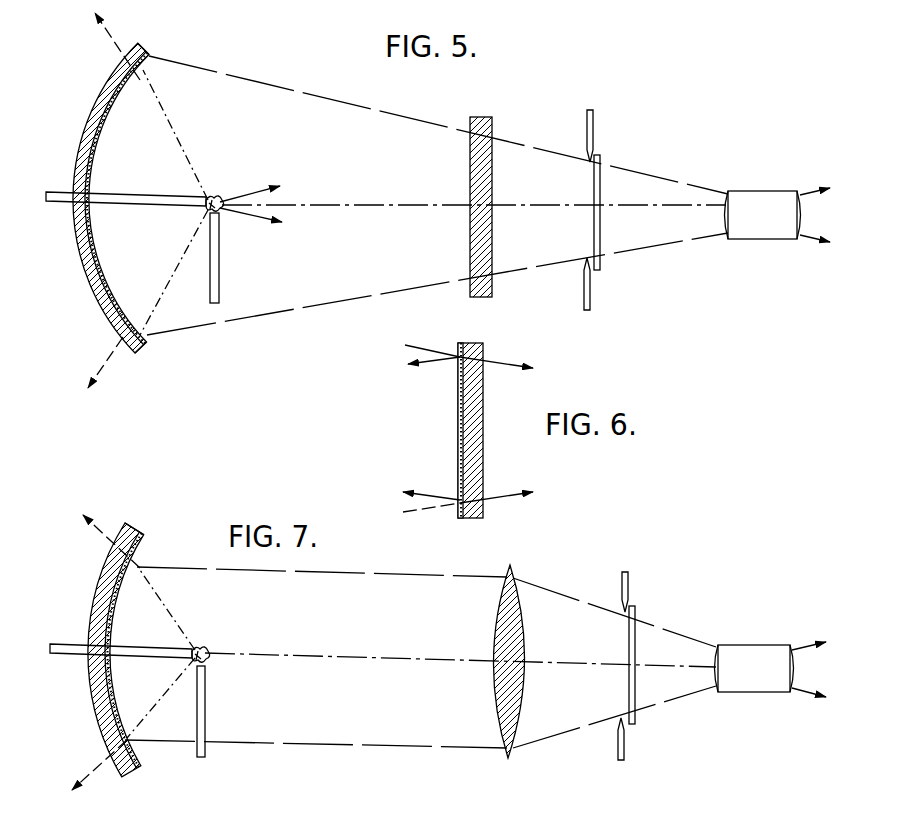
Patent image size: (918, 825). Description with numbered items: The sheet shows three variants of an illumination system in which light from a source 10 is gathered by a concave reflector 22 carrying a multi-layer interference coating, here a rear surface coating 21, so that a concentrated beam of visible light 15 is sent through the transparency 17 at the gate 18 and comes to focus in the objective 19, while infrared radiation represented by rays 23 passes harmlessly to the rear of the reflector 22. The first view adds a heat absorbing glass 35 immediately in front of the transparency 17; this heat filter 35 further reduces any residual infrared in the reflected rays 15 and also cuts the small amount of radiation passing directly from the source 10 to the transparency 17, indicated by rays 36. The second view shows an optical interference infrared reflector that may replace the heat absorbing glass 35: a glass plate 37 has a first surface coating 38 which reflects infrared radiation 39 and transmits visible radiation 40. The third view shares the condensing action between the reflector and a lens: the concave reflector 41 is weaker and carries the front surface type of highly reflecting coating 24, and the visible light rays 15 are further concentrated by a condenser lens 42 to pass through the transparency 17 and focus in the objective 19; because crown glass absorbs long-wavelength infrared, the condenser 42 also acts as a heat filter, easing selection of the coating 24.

In FIG. 5, the light source 10 is at (214, 199).
In FIG. 7, the light source 10 is at (206, 654).
In FIG. 5, the visible light 15 is at (383, 119).
In FIG. 6, the visible light 15 is at (420, 336).
In FIG. 7, the visible light 15 is at (380, 574).
In FIG. 5, the transparency 17 is at (601, 158).
In FIG. 7, the transparency 17 is at (637, 609).
In FIG. 5, the gate 18 is at (587, 126).
In FIG. 7, the gate 18 is at (630, 578).
In FIG. 5, the objective 19 is at (746, 197).
In FIG. 7, the objective 19 is at (750, 656).
In FIG. 5, the rear surface coating 21 is at (134, 356).
In FIG. 5, the concave reflector 22 is at (150, 352).
In FIG. 5, the infrared radiation rays 23 is at (114, 45).
In FIG. 7, the infrared radiation rays 23 is at (102, 541).
In FIG. 7, the optical interference highly reflecting coating 24 is at (148, 540).
In FIG. 5, the heat absorbing glass 35 is at (470, 178).
In FIG. 5, the direct rays 36 is at (285, 220).
In FIG. 6, the glass plate 37 is at (485, 411).
In FIG. 6, the first surface coating 38 is at (458, 418).
In FIG. 6, the infrared radiation 39 is at (430, 366).
In FIG. 6, the visible radiation 40 is at (513, 356).
In FIG. 7, the concave reflector 41 is at (132, 526).
In FIG. 7, the condenser lens 42 is at (500, 638).